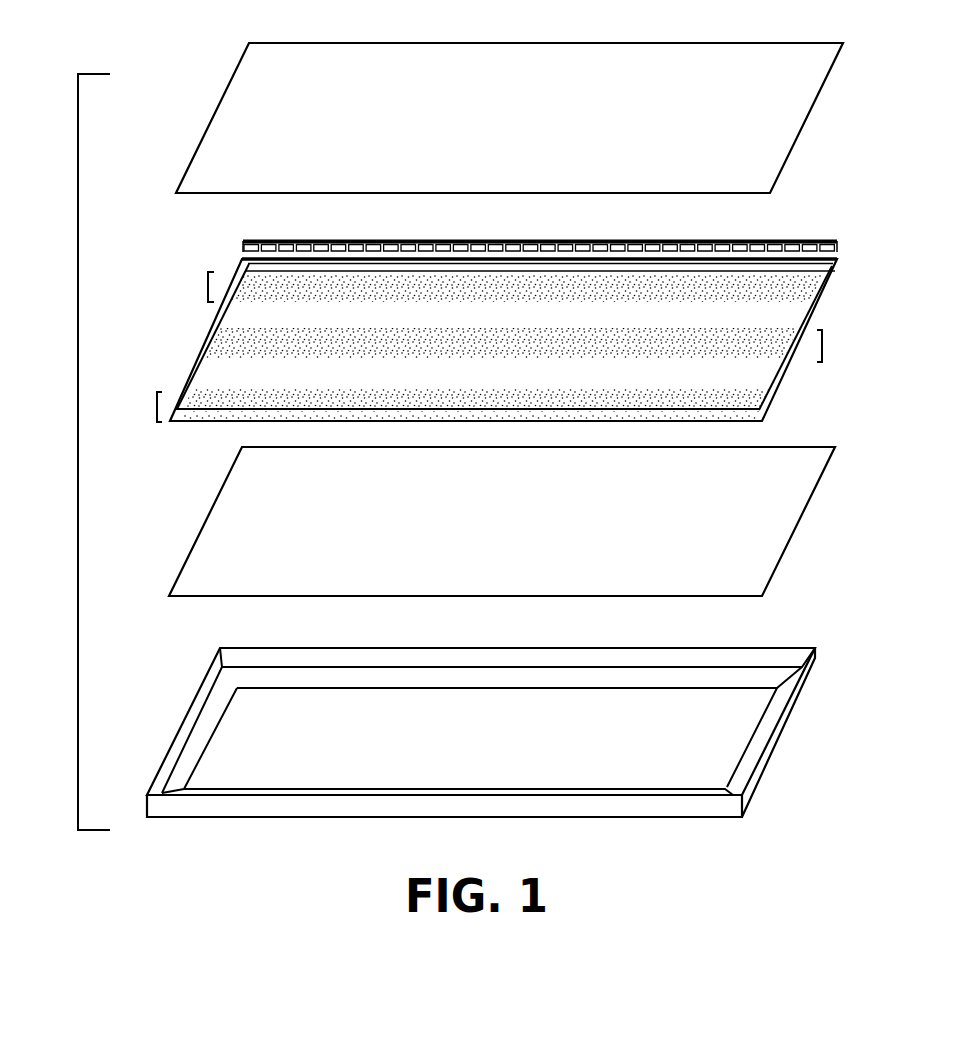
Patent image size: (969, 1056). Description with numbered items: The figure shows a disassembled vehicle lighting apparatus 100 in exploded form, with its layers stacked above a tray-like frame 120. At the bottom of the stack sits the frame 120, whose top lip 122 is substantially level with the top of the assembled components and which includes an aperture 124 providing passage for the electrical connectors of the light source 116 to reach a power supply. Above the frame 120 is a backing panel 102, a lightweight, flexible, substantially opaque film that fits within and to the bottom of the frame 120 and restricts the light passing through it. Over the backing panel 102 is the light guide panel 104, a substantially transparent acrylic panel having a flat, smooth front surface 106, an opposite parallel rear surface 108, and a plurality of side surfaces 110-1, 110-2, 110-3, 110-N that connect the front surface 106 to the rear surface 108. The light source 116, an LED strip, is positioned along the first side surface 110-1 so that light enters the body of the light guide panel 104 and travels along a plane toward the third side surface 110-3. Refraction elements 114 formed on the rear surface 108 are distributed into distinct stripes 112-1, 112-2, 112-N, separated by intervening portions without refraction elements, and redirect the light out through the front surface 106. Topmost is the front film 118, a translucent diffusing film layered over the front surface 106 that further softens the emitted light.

The vehicle lighting apparatus 100 is at (76, 452).
The backing panel 102 is at (807, 513).
The light guide panel 104 is at (837, 261).
The front surface 106 is at (738, 373).
The rear surface 108 is at (770, 405).
The first side surface 110-1 is at (241, 262).
The second side surface 110-2 is at (197, 357).
The third side surface 110-3 is at (207, 420).
The Nth side surface 110-N is at (808, 315).
The first stripe of refraction elements 112-1 is at (208, 287).
The second stripe of refraction elements 112-2 is at (823, 346).
The Nth stripe of refraction elements 112-N is at (157, 407).
The refraction element 114 is at (821, 294).
The light source 116 is at (838, 243).
The front film 118 is at (820, 92).
The frame 120 is at (778, 730).
The top lip 122 is at (183, 718).
The aperture 124 is at (213, 673).